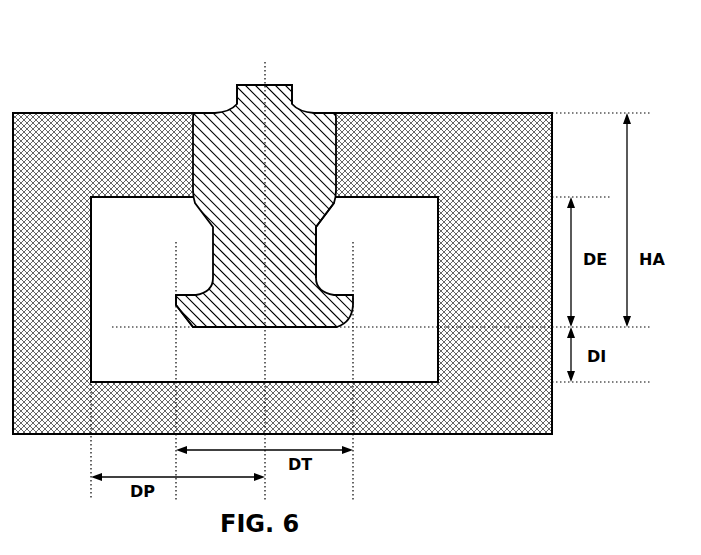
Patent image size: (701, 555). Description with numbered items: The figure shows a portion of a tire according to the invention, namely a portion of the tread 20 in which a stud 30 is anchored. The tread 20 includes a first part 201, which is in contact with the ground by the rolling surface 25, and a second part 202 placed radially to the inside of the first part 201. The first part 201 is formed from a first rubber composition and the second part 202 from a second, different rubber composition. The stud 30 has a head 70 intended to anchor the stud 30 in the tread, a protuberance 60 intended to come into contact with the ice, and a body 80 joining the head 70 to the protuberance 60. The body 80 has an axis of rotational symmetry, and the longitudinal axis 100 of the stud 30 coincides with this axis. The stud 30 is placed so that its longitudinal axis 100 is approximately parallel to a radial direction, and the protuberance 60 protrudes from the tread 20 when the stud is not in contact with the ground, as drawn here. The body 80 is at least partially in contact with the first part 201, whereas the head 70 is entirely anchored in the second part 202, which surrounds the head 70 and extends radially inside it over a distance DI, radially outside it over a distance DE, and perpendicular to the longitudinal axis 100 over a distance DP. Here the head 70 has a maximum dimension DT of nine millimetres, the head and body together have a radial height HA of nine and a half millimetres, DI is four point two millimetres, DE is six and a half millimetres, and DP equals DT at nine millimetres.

The tread 20 is at (115, 145).
The rolling surface 25 is at (439, 113).
The stud 30 is at (233, 133).
The protuberance 60 is at (277, 88).
The head 70 is at (192, 310).
The body 80 is at (283, 246).
The longitudinal axis 100 is at (267, 346).
The first part 201 is at (39, 155).
The second part 202 is at (264, 289).